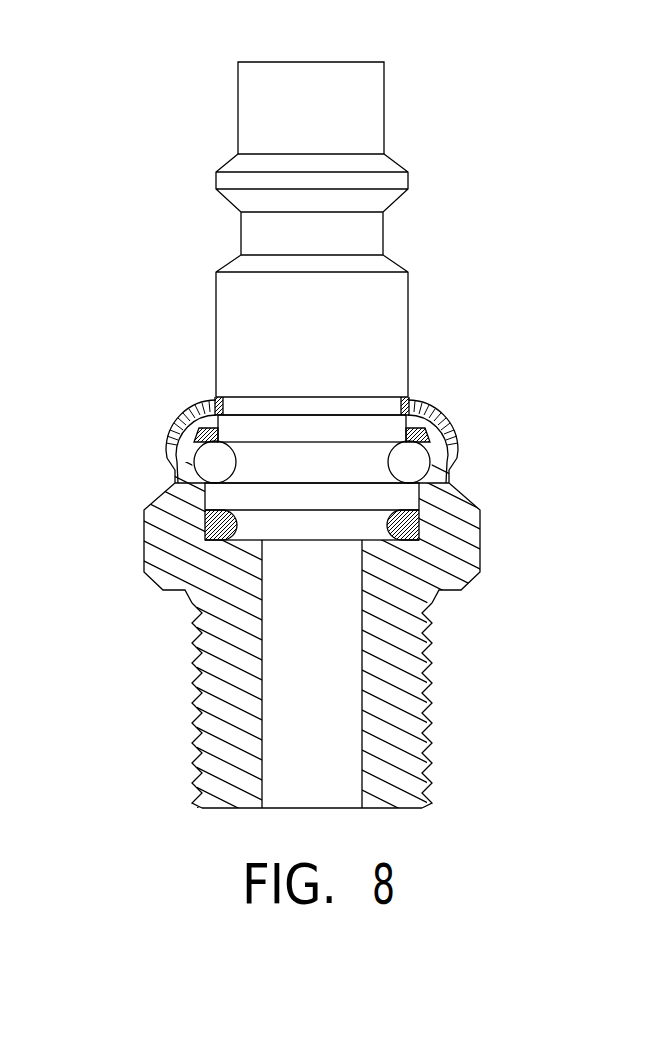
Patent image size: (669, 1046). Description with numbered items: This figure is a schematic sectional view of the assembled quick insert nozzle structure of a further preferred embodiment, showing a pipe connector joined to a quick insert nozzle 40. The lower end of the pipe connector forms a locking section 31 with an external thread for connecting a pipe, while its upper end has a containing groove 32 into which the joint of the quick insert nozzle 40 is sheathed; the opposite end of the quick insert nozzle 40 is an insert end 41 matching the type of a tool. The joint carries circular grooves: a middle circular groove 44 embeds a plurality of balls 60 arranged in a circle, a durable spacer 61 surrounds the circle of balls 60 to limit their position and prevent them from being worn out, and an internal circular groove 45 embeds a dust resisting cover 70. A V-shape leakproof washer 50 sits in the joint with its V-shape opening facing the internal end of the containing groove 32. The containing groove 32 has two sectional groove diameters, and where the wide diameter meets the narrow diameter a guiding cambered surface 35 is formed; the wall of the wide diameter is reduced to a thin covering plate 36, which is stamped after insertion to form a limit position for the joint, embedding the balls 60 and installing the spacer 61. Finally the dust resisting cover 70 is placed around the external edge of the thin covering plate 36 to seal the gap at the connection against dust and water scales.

The locking section 31 is at (432, 713).
The containing groove 32 is at (305, 548).
The guiding cambered surface 35 is at (215, 462).
The thin covering plate 36 is at (200, 427).
The quick insert nozzle 40 is at (423, 263).
The insert end 41 is at (367, 165).
The middle circular groove 44 is at (195, 445).
The internal circular groove 45 is at (213, 400).
The V-shape leakproof washer 50 is at (480, 548).
The balls 60 is at (447, 483).
The spacer 61 is at (415, 430).
The dust resisting cover 70 is at (445, 422).